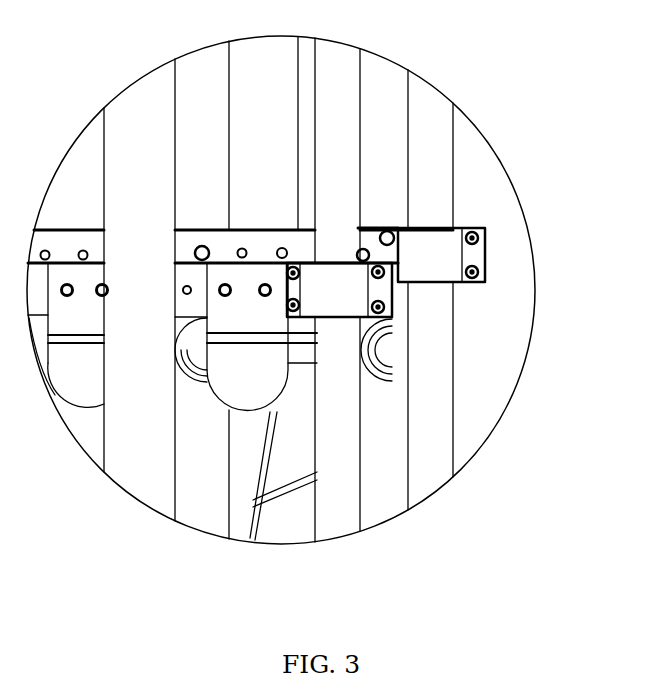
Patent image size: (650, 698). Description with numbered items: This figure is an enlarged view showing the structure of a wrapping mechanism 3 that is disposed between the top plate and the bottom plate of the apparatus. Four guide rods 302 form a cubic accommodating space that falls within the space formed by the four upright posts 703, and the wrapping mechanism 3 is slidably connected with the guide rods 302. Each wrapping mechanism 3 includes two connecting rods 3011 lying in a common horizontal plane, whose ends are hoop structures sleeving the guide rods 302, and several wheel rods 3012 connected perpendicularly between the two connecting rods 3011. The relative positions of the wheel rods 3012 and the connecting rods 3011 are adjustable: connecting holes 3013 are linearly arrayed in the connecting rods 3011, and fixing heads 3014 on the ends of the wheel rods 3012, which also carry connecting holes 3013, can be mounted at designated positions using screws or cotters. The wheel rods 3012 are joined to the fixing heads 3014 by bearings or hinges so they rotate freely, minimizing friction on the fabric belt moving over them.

The wrapping mechanism 3 is at (599, 60).
The upright post 703 is at (270, 133).
The guide rod 302 is at (442, 363).
The connecting hole 3013 is at (190, 288).
The connecting rod 3011 is at (306, 283).
The wheel rod 3012 is at (307, 347).
The fixing head 3014 is at (248, 360).